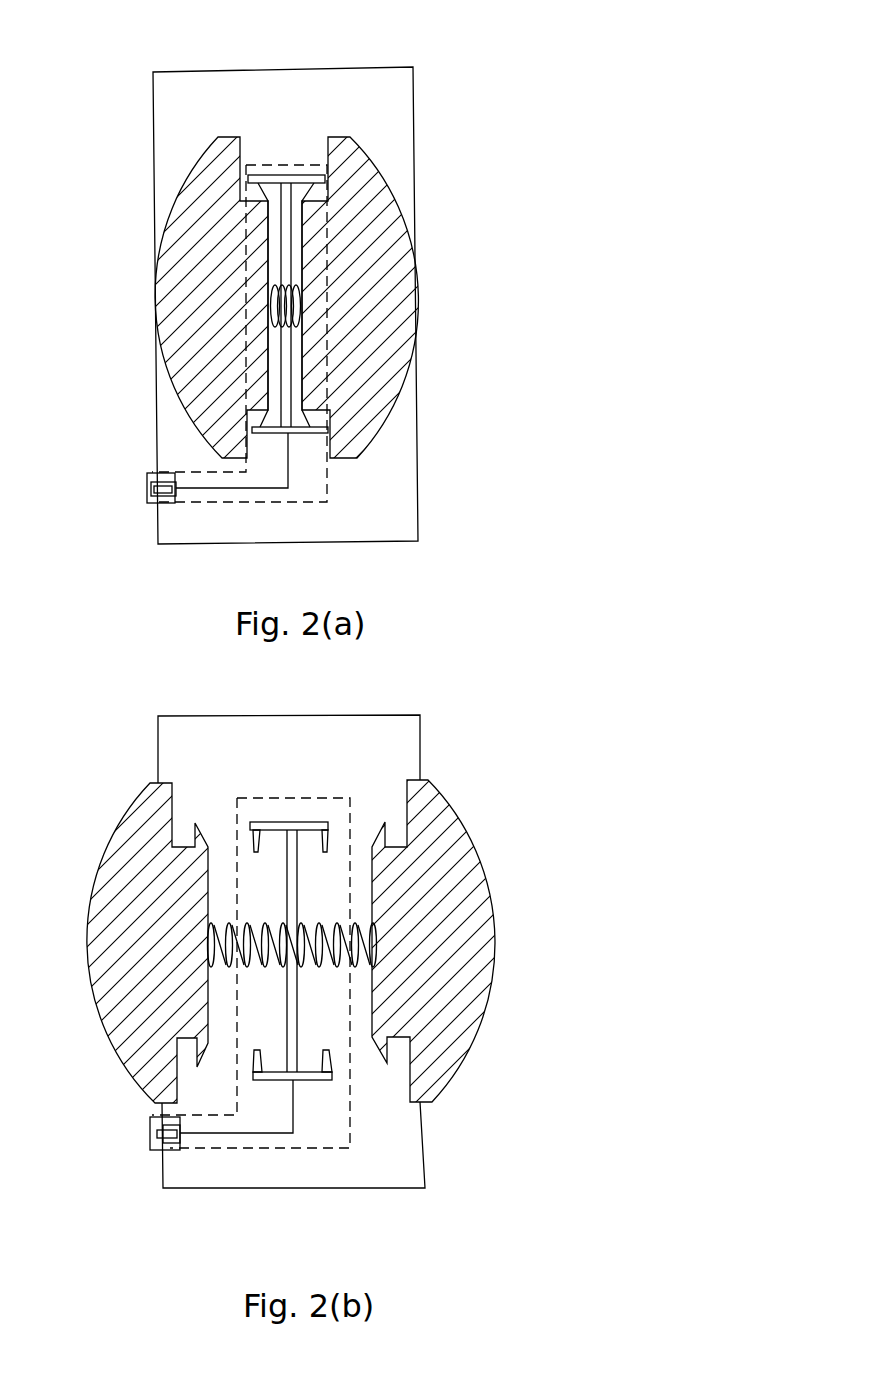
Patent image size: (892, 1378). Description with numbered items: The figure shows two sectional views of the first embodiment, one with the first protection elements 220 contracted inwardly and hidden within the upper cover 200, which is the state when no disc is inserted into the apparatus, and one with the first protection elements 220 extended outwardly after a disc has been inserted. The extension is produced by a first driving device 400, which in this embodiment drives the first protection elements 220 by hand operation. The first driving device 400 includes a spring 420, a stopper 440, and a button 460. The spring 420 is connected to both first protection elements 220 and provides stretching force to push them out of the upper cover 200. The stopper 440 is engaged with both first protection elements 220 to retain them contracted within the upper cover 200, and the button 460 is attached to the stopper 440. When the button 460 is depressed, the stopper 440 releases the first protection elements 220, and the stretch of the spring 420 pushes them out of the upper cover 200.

In FIG. 2A, the upper cover 200 is at (351, 78).
In FIG. 2B, the upper cover 200 is at (385, 738).
In FIG. 2A, the first protection elements 220 is at (362, 380).
In FIG. 2B, the first protection elements 220 is at (458, 935).
In FIG. 2A, the first driving device 400 is at (270, 165).
In FIG. 2B, the first driving device 400 is at (262, 797).
In FIG. 2A, the spring 420 is at (299, 310).
In FIG. 2B, the spring 420 is at (373, 962).
In FIG. 2A, the stopper 440 is at (313, 168).
In FIG. 2B, the stopper 440 is at (326, 822).
In FIG. 2A, the button 460 is at (152, 487).
In FIG. 2B, the button 460 is at (158, 1132).